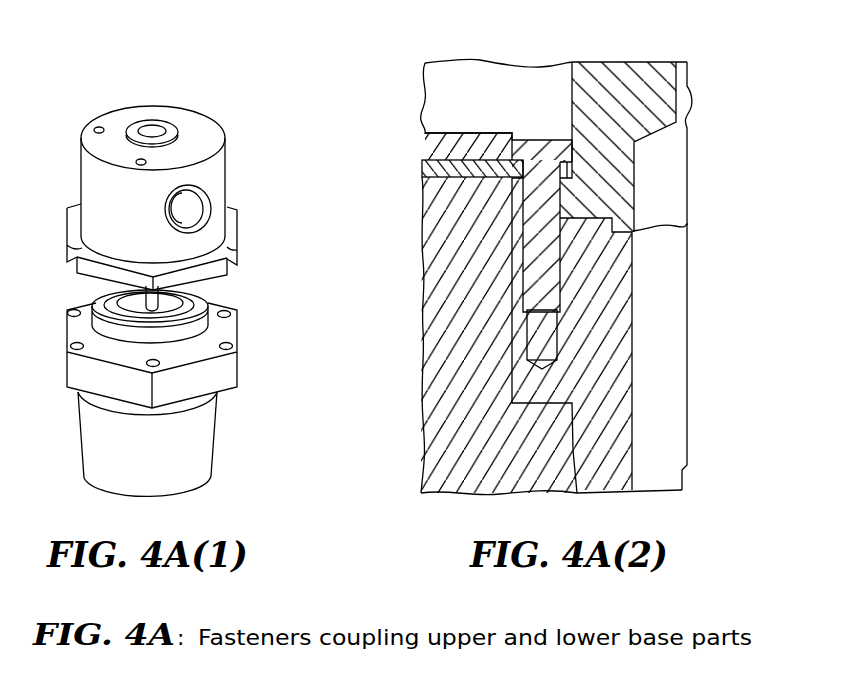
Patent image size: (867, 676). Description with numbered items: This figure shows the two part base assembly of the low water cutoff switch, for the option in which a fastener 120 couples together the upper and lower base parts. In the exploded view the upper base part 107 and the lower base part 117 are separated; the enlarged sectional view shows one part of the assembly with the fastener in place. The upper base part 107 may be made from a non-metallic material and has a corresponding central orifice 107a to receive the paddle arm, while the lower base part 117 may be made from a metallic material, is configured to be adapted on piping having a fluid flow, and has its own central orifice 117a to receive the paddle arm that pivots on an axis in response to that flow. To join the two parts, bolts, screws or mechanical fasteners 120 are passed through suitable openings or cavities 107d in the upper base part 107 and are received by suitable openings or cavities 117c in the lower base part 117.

The upper base part 107 is at (590, 91).
The central orifice 107a is at (670, 162).
The openings or cavities 107d is at (228, 248).
The lower base part 117 is at (205, 437).
The central orifice 117a is at (660, 345).
The openings or cavities 117c is at (228, 338).
The fastener 120 is at (538, 263).